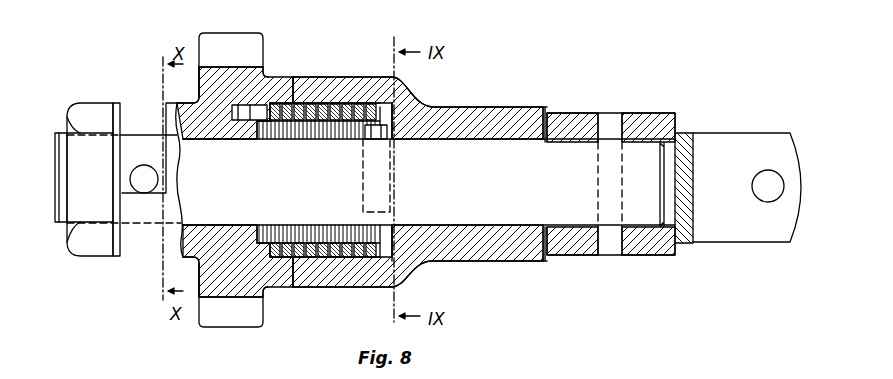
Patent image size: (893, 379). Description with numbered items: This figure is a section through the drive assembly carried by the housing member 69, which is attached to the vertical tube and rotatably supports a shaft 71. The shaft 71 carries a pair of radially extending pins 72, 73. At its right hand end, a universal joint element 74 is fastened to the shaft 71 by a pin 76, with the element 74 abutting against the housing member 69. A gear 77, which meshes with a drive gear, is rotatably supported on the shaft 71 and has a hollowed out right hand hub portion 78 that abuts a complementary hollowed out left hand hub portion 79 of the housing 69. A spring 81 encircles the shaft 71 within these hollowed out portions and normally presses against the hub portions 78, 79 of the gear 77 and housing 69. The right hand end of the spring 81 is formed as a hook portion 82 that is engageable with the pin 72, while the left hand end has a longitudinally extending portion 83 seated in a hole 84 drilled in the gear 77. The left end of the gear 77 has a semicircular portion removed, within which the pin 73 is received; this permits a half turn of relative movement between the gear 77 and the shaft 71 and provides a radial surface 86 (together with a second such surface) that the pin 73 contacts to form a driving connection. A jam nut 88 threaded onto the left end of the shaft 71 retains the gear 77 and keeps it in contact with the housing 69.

The housing member 69 is at (476, 108).
The shaft 71 is at (143, 135).
The pin 72 is at (363, 178).
The pin 73 is at (145, 193).
The universal joint element 74 is at (752, 243).
The pin 76 is at (610, 255).
The gear 77 is at (251, 36).
The hub portion 78 is at (256, 228).
The hub portion 79 is at (390, 226).
The spring 81 is at (314, 131).
The hook portion 82 is at (381, 140).
The longitudinally extending portion 83 is at (256, 113).
The hole 84 is at (232, 110).
The radial surface 86 is at (122, 190).
The jam nut 88 is at (88, 250).